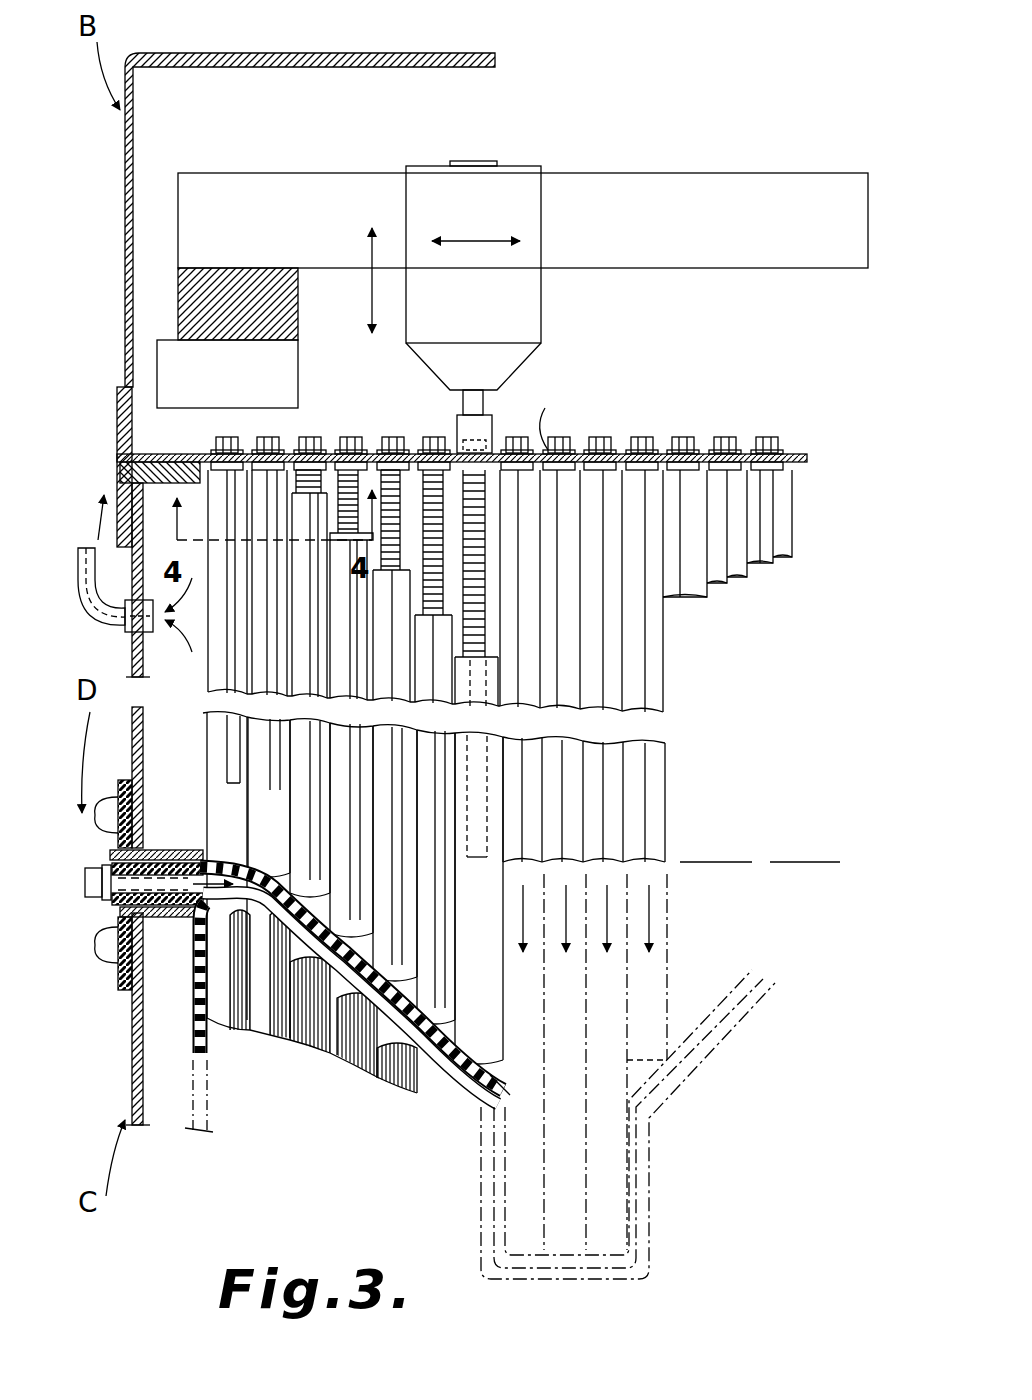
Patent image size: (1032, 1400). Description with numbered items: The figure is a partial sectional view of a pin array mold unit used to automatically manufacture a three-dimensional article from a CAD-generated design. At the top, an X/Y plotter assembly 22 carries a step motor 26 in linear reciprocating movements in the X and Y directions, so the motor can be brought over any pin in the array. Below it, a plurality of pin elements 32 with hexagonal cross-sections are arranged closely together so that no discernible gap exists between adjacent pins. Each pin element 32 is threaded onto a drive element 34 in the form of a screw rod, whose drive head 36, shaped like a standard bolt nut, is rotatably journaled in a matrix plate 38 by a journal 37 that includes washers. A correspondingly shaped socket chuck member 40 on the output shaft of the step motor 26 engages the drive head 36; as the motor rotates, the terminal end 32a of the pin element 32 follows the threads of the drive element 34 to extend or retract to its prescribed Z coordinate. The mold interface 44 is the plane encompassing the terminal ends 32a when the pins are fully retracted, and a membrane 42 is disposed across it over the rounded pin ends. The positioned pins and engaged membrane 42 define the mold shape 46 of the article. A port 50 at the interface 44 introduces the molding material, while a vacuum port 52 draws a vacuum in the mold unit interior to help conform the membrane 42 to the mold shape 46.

The X/Y plotter assembly 22 is at (327, 158).
The step motor 26 is at (497, 321).
The pin elements 32 is at (684, 700).
The terminal end 32a is at (484, 1093).
The drive element 34 is at (408, 452).
The drive head 36 is at (310, 438).
The journal 37 is at (786, 455).
The matrix plate 38 is at (800, 456).
The chuck member 40 is at (497, 435).
The membrane 42 is at (198, 1135).
The mold interface 44 is at (670, 870).
The mold shape 46 is at (649, 1185).
The port 50 is at (90, 910).
The vacuum port 52 is at (88, 542).